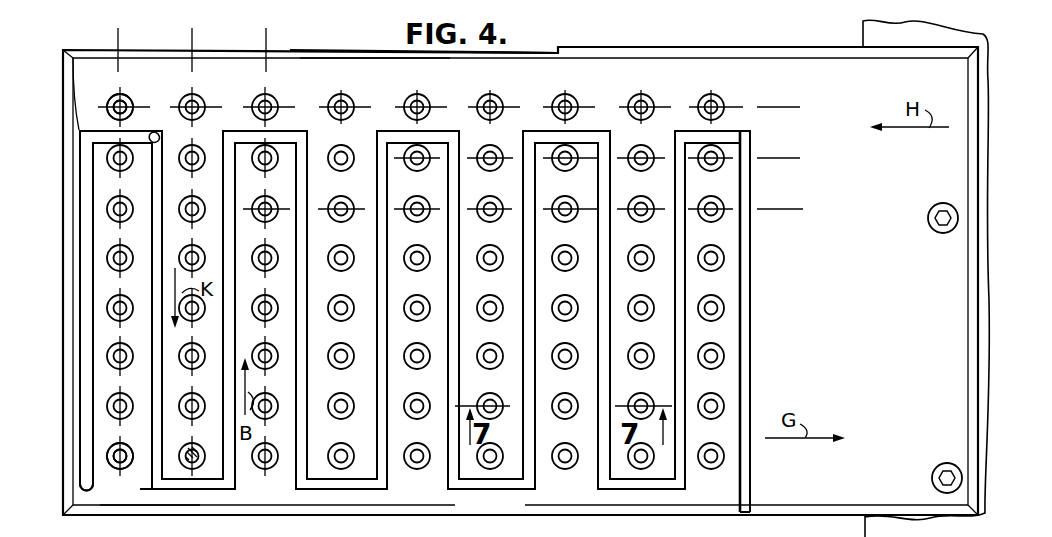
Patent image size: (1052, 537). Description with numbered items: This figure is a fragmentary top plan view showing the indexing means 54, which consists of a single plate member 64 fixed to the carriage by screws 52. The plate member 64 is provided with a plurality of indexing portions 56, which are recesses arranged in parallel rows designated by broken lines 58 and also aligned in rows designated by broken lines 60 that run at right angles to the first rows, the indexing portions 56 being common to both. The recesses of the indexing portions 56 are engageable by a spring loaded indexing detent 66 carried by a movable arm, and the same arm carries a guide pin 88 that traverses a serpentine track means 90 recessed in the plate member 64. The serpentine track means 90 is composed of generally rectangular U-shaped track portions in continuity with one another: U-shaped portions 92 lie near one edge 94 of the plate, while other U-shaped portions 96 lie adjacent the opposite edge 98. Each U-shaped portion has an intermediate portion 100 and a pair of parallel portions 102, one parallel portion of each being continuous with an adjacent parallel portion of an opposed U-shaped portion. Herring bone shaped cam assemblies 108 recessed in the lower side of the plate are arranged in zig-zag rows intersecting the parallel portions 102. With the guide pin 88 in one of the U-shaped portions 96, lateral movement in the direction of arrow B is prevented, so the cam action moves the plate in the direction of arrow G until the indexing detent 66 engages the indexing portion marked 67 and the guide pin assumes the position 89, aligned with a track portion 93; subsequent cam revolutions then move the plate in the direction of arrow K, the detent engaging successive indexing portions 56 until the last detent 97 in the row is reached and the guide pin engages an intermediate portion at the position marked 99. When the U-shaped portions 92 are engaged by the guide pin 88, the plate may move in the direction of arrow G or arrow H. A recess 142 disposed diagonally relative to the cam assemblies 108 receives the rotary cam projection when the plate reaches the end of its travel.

The screws 52 is at (946, 462).
The indexing means 54 is at (540, 42).
The indexing portions 56 is at (180, 104).
The broken lines 58 is at (191, 48).
The broken lines 60 is at (803, 114).
The plate member 64 is at (372, 67).
The indexing detent 66 is at (202, 467).
The indexing portion 67 is at (124, 446).
The guide pin 88 is at (162, 145).
The guide pin position 89 is at (157, 494).
The serpentine track means 90 is at (100, 120).
The U-shaped portions 92 is at (293, 131).
The portion of serpentine track 93 is at (150, 343).
The edge of plate 94 is at (320, 47).
The U-shaped portions 96 is at (73, 48).
The last detent 97 is at (119, 95).
The edge of plate 98 is at (517, 517).
The guide pin position 99 is at (165, 140).
The intermediate portion 100 is at (427, 131).
The parallel portions 102 is at (388, 404).
The herring bone shaped cam assemblies 108 is at (634, 523).
The recess 142 is at (829, 526).